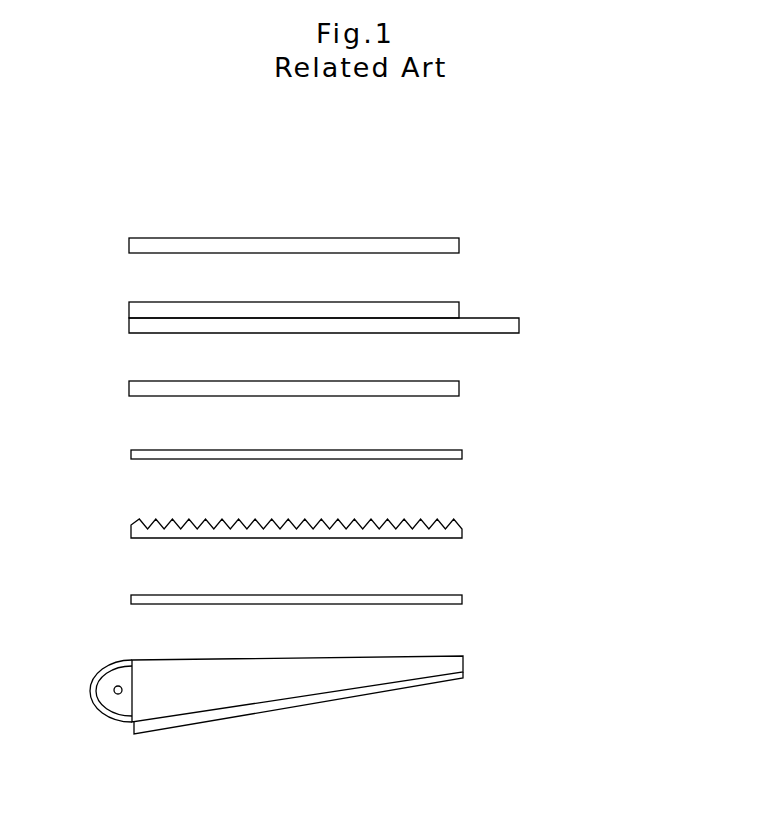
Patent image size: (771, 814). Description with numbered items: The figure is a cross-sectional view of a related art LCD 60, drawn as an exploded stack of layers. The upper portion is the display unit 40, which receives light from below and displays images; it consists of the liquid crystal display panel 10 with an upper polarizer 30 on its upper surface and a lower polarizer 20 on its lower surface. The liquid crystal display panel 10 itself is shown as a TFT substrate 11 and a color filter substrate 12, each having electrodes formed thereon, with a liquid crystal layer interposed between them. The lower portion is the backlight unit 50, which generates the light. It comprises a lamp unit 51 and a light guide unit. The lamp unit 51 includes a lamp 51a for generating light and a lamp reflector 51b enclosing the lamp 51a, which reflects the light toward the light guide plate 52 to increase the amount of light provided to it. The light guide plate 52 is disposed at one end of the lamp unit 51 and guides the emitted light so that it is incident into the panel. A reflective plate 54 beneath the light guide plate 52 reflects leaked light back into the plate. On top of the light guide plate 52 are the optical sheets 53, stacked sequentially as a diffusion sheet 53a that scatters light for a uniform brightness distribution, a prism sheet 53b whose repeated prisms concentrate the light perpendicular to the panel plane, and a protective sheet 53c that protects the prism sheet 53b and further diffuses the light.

The related art LCD 60 is at (443, 190).
The display unit 40 is at (651, 230).
The upper polarizer 30 is at (459, 243).
The liquid crystal display panel 10 is at (375, 300).
The color filter substrate 12 is at (459, 310).
The TFT substrate 11 is at (359, 316).
The lower polarizer 20 is at (459, 386).
The backlight unit 50 is at (653, 437).
The optical sheets 53 is at (556, 448).
The protective sheet 53c is at (462, 454).
The prism sheet 53b is at (462, 527).
The diffusion sheet 53a is at (462, 599).
The light guide plate 52 is at (463, 660).
The reflective plate 54 is at (463, 676).
The lamp unit 51 is at (78, 726).
The lamp 51a is at (114, 690).
The lamp reflector 51b is at (108, 718).